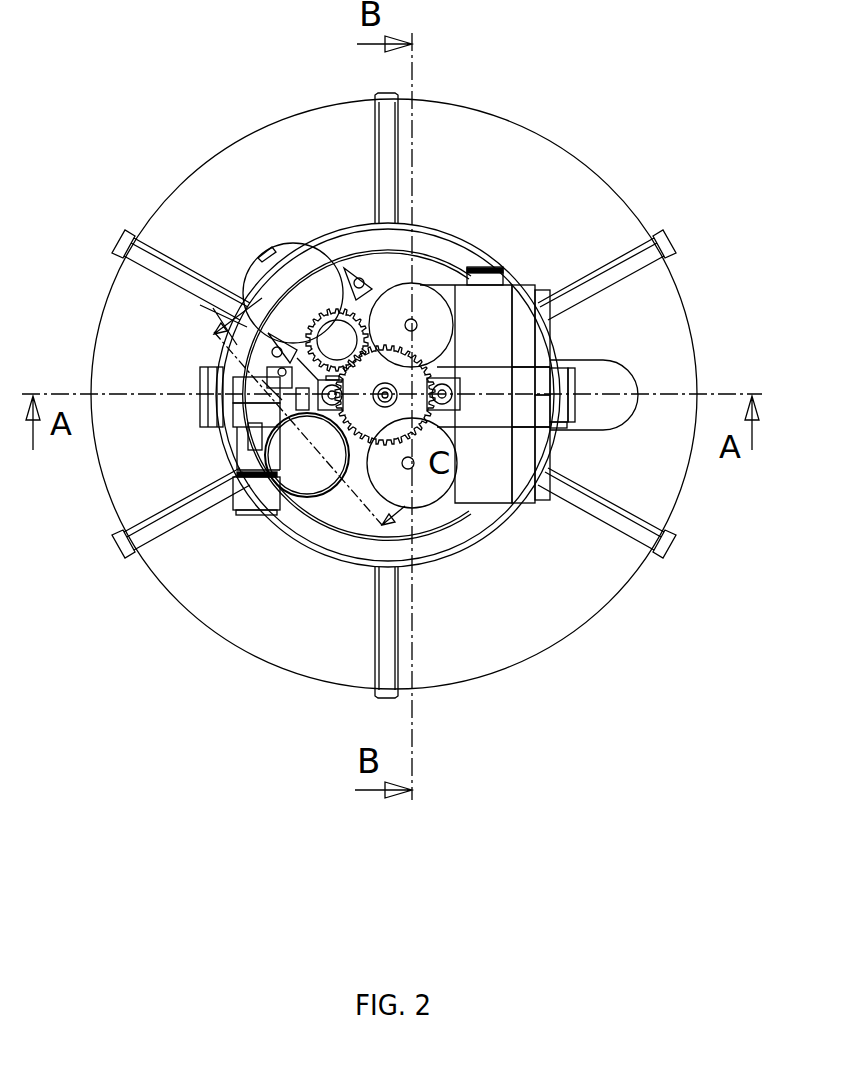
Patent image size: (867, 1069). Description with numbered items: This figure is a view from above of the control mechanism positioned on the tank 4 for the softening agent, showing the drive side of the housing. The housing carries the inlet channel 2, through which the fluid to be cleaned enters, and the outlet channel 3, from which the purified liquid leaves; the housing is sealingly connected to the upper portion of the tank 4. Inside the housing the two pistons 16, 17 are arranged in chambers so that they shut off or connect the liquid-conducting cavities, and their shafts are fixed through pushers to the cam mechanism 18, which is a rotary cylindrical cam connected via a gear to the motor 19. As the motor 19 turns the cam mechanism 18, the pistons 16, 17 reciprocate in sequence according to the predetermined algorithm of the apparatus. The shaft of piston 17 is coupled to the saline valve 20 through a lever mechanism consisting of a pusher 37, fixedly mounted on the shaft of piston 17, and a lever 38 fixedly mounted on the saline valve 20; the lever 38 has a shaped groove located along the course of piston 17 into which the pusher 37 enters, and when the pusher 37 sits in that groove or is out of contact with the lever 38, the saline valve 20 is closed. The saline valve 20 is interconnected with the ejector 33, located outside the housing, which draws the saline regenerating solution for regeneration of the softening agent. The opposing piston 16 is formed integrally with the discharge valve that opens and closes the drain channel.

The inlet channel 2 is at (543, 327).
The outlet channel 3 is at (543, 465).
The tank for softening agent 4 is at (514, 194).
The piston 16 is at (442, 402).
The piston 17 is at (328, 400).
The cam mechanism 18 is at (385, 395).
The motor 19 is at (297, 262).
The saline valve 20 is at (257, 405).
The ejector 33 is at (307, 455).
The pusher 37 is at (225, 348).
The lever 38 is at (278, 390).